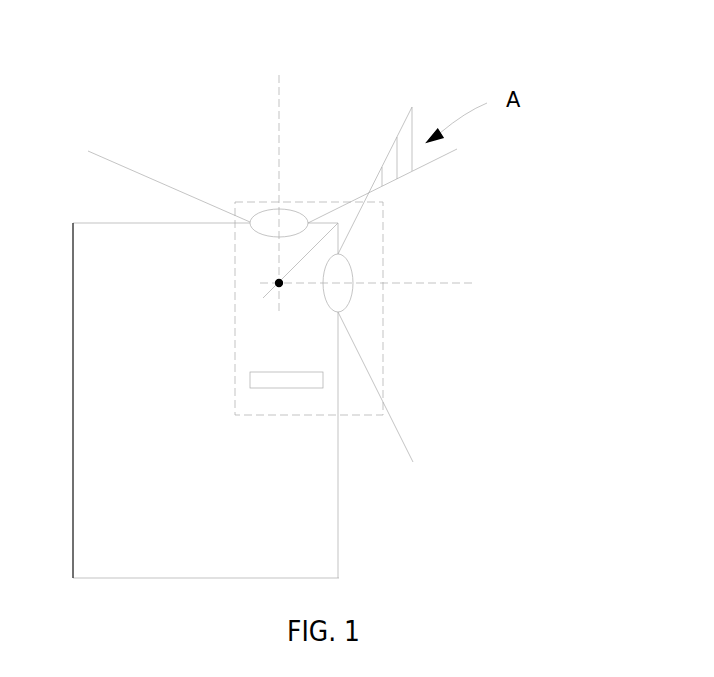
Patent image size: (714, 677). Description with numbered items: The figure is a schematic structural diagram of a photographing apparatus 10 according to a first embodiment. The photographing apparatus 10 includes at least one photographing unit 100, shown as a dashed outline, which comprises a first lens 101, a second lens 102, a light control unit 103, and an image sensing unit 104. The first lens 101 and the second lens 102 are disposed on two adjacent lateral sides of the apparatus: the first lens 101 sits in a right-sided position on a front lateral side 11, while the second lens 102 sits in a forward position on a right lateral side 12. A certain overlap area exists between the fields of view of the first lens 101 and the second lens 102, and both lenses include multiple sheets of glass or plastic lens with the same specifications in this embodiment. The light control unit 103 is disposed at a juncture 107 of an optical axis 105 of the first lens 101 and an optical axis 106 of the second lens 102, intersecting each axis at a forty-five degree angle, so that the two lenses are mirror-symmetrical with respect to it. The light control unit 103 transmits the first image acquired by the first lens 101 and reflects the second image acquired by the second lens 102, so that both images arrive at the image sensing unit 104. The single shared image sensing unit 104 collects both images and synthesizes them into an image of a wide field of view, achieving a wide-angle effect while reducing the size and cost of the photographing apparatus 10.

The photographing apparatus 10 is at (305, 34).
The front lateral side 11 is at (162, 224).
The right lateral side 12 is at (339, 518).
The photographing unit 100 is at (250, 415).
The first lens 101 is at (273, 218).
The second lens 102 is at (347, 303).
The light control unit 103 is at (263, 297).
The image sensing unit 104 is at (250, 383).
The optical axis of the first lens 105 is at (280, 132).
The optical axis of the second lens 106 is at (455, 282).
The juncture 107 is at (276, 281).